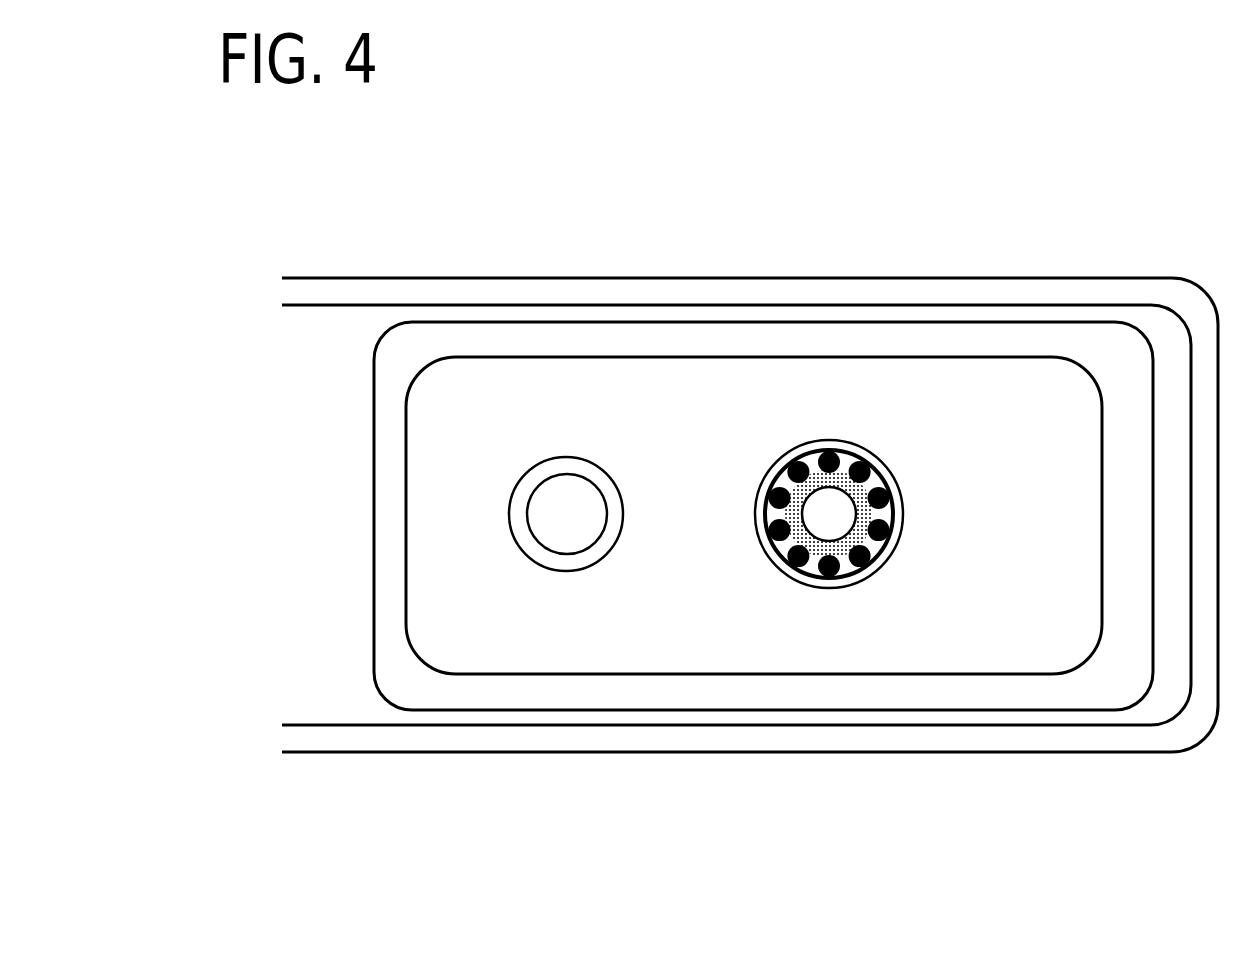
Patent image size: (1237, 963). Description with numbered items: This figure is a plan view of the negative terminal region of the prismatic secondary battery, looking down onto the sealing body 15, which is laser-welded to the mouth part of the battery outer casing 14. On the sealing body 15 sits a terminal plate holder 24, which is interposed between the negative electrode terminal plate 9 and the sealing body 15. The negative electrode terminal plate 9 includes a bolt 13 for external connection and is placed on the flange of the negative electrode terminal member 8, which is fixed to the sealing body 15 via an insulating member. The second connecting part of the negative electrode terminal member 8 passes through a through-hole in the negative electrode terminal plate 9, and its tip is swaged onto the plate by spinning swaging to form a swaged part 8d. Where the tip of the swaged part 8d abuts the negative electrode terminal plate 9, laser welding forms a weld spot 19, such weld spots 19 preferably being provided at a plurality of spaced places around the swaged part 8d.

The negative electrode terminal member 8 is at (843, 513).
The swaged part 8d is at (835, 443).
The negative electrode terminal plate 9 is at (785, 625).
The bolt 13 is at (567, 530).
The battery outer casing 14 is at (468, 293).
The sealing body 15 is at (313, 342).
The weld spot 19 is at (855, 563).
The terminal plate holder 24 is at (592, 342).